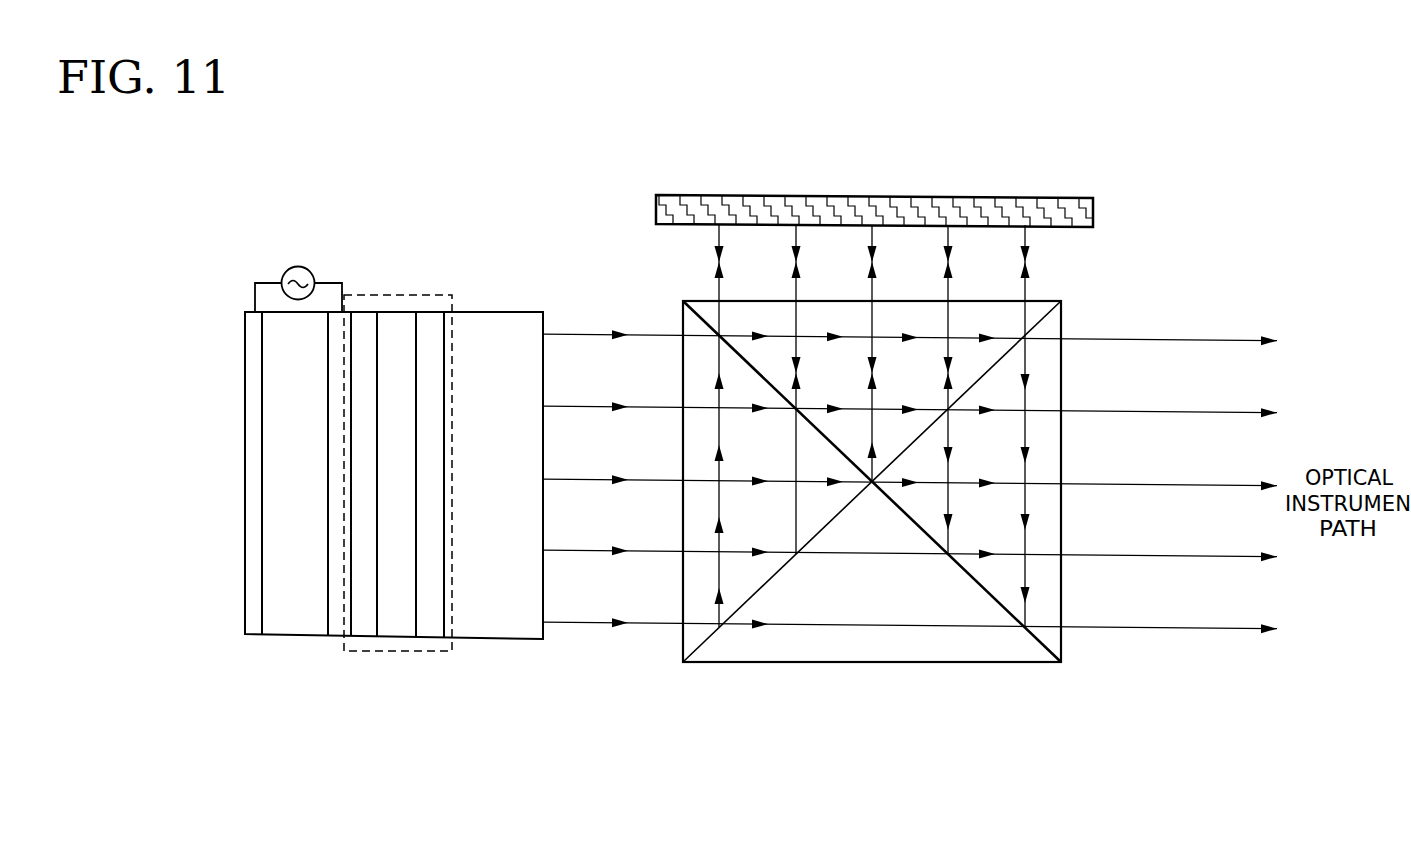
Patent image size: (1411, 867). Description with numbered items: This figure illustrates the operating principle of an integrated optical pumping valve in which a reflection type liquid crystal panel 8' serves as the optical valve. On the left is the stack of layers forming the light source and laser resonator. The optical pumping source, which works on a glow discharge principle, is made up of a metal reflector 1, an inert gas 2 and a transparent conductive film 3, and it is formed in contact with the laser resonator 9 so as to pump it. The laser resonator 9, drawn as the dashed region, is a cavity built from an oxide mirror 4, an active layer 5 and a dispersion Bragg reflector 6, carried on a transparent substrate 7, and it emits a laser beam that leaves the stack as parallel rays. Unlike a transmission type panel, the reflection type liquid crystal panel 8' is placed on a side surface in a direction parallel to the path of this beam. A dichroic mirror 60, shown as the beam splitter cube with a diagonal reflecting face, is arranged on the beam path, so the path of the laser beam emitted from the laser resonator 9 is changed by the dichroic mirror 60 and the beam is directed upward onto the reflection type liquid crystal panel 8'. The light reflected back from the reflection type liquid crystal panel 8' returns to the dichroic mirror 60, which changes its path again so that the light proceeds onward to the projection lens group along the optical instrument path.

The metal reflector 1 is at (247, 635).
The inert gas 2 is at (287, 636).
The transparent conductive film 3 is at (337, 636).
The oxide mirror 4 is at (363, 636).
The second layer of modulator 5 is at (397, 637).
The dispersion Bragg reflector 6 is at (430, 637).
The transparent substrate 7 is at (493, 639).
The reflection type liquid crystal panel 8' is at (903, 207).
The laser resonator 9 is at (400, 295).
The dichroic mirror 60 is at (872, 662).